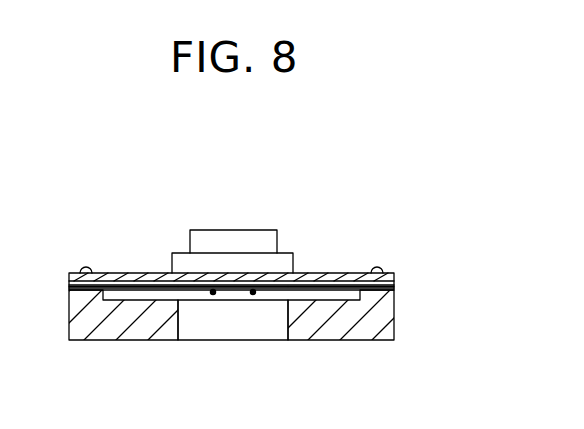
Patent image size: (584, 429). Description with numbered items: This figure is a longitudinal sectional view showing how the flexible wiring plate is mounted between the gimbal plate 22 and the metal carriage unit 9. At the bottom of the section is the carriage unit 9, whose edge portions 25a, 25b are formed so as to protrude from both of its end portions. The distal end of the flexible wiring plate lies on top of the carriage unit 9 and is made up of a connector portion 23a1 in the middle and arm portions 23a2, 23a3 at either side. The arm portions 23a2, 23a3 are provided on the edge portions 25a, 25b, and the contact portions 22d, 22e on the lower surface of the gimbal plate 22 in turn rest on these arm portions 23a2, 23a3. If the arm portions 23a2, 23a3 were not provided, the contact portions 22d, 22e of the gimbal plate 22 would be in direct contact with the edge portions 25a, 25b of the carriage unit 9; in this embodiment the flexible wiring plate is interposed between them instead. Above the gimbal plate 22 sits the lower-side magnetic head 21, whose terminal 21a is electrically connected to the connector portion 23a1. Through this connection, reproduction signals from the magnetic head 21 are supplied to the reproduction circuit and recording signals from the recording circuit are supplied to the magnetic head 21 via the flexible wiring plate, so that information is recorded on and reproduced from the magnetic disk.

The carriage unit 9 is at (170, 342).
The magnetic head 21 is at (274, 233).
The terminal 21a is at (215, 293).
The gimbal plate 22 is at (313, 271).
The contact portion 22d is at (382, 275).
The contact portion 22e is at (92, 271).
The connector portion 23a1 is at (199, 289).
The arm portion 23a2 is at (90, 283).
The arm portion 23a3 is at (374, 286).
The edge portion 25a is at (69, 304).
The edge portion 25b is at (394, 316).